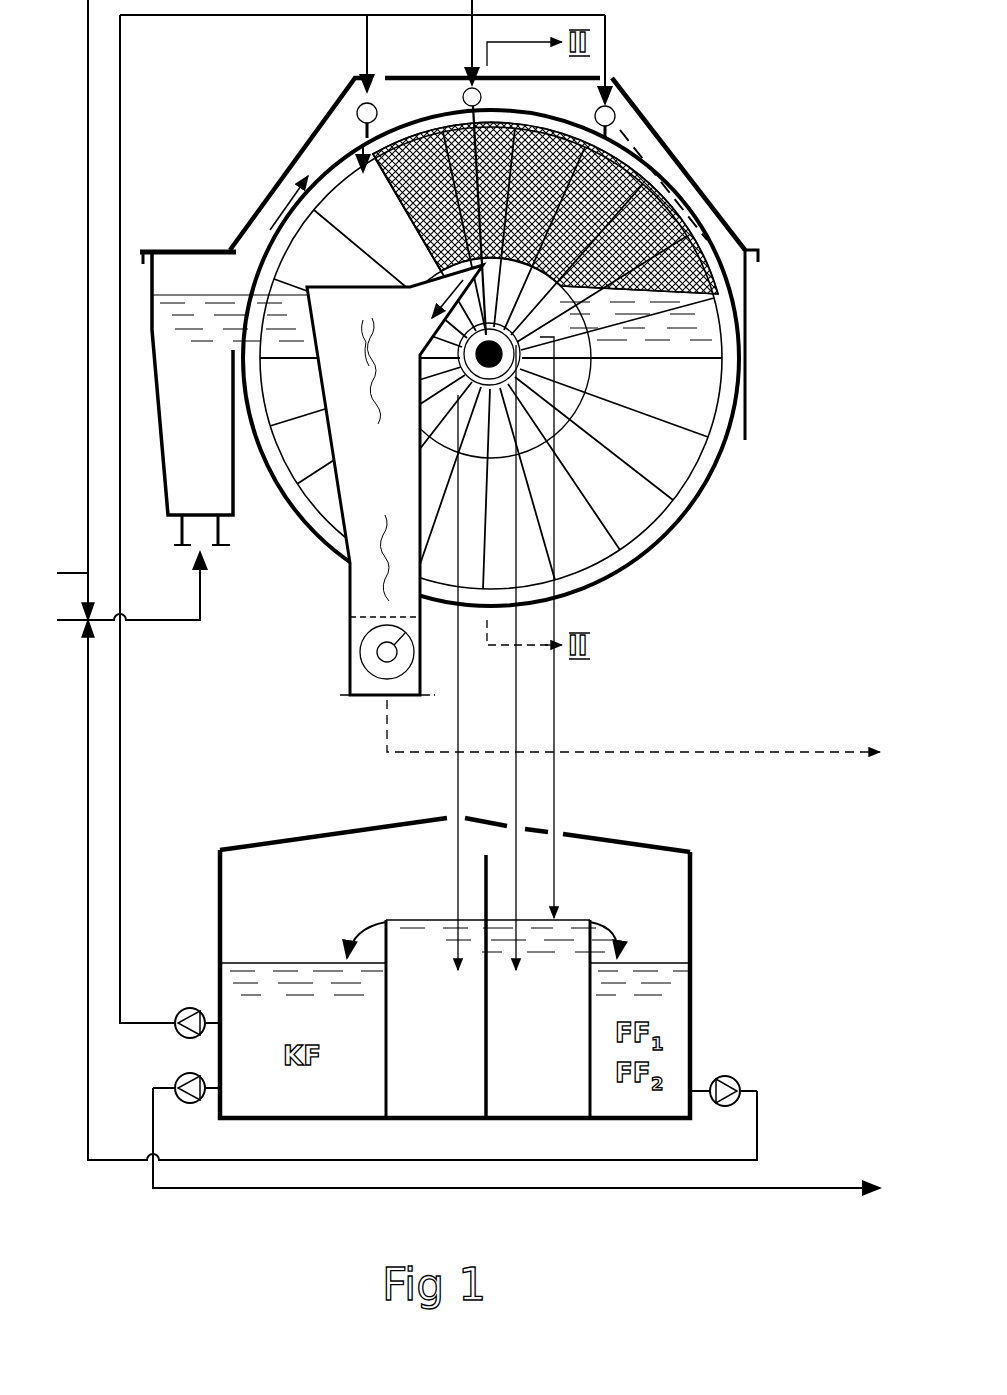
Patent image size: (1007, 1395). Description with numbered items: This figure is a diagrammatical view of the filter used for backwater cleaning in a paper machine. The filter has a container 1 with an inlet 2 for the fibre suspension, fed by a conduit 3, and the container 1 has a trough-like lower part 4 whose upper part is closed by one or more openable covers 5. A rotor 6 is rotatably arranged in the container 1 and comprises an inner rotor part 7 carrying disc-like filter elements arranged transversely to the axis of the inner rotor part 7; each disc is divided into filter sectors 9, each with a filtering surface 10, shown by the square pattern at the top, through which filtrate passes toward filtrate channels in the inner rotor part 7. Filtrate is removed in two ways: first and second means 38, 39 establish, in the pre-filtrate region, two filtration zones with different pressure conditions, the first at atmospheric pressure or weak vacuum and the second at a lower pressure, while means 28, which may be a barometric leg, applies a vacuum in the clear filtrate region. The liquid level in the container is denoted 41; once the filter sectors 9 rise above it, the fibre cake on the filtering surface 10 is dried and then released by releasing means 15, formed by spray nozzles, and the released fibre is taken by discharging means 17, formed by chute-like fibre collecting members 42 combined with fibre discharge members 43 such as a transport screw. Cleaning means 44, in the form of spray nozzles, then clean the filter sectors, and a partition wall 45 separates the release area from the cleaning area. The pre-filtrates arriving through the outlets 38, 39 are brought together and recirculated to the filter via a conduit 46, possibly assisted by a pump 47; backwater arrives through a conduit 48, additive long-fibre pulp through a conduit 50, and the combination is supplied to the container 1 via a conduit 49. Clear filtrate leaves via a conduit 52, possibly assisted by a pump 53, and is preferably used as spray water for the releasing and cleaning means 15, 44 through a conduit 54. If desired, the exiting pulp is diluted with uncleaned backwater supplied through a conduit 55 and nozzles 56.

The container 1 is at (682, 540).
The inlet 2 is at (238, 268).
The conduit 3 is at (217, 483).
The lower part 4 is at (745, 340).
The openable covers 5 is at (688, 170).
The rotor 6 is at (660, 160).
The inner rotor part 7 is at (498, 430).
The filter sectors 9 is at (703, 398).
The filtering surface 10 is at (445, 117).
The releasing means 15 is at (356, 110).
The discharging means 17 is at (318, 373).
The vacuum applying means 28 is at (458, 784).
The first means 38 is at (557, 797).
The second means 39 is at (556, 872).
The liquid level 41 is at (210, 292).
The fibre collecting members 42 is at (333, 485).
The fibre discharge members 43 is at (362, 655).
The cleaning means 44 is at (615, 116).
The partition wall 45 is at (510, 132).
The conduit 46 is at (122, 856).
The pump 47 is at (732, 1082).
The conduit 48 is at (66, 571).
The conduit 49 is at (176, 622).
The conduit 50 is at (84, 628).
The conduit 52 is at (262, 1190).
The pump 53 is at (190, 1104).
The conduit 54 is at (122, 738).
The conduit 55 is at (90, 150).
The nozzles 56 is at (467, 88).